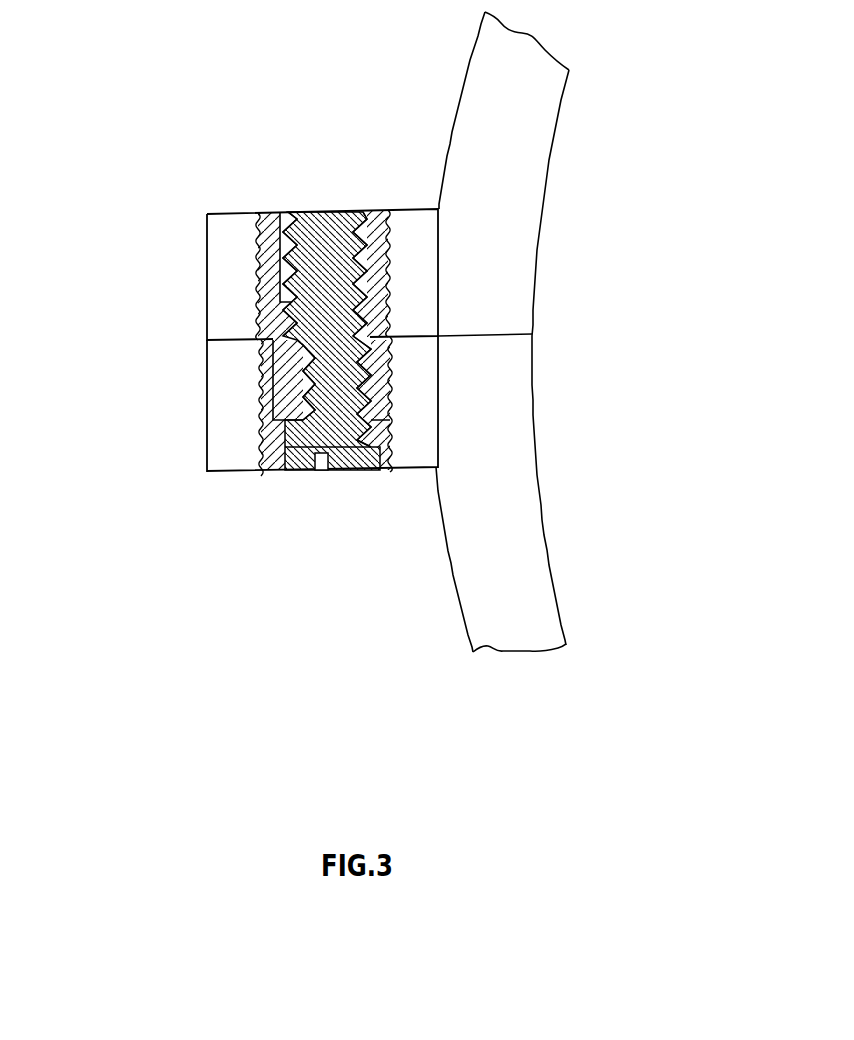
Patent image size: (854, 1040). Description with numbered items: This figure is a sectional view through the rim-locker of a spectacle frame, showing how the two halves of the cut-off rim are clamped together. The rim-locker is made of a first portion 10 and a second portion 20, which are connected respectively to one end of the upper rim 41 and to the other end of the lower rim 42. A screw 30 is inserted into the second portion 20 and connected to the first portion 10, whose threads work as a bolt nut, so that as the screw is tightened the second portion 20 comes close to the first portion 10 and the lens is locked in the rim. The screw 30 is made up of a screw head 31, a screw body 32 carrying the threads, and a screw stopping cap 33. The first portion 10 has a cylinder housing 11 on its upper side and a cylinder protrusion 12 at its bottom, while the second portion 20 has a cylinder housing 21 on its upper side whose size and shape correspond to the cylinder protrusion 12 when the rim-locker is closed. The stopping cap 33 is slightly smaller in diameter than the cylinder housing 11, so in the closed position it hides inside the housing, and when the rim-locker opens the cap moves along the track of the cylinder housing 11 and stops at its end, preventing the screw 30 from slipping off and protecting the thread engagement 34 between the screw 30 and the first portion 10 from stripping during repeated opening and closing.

The first portion 10 is at (243, 236).
The cylinder housing 11 is at (279, 235).
The cylinder protrusion 12 is at (283, 372).
The second portion 20 is at (232, 443).
The cylinder housing 21 is at (263, 415).
The screw 30 is at (290, 470).
The screw head 31 is at (355, 470).
The screw body 32 is at (333, 370).
The screw stopping cap 33 is at (311, 214).
The thread engagement region 34 is at (357, 315).
The upper rim 41 is at (518, 145).
The lower rim 42 is at (517, 578).